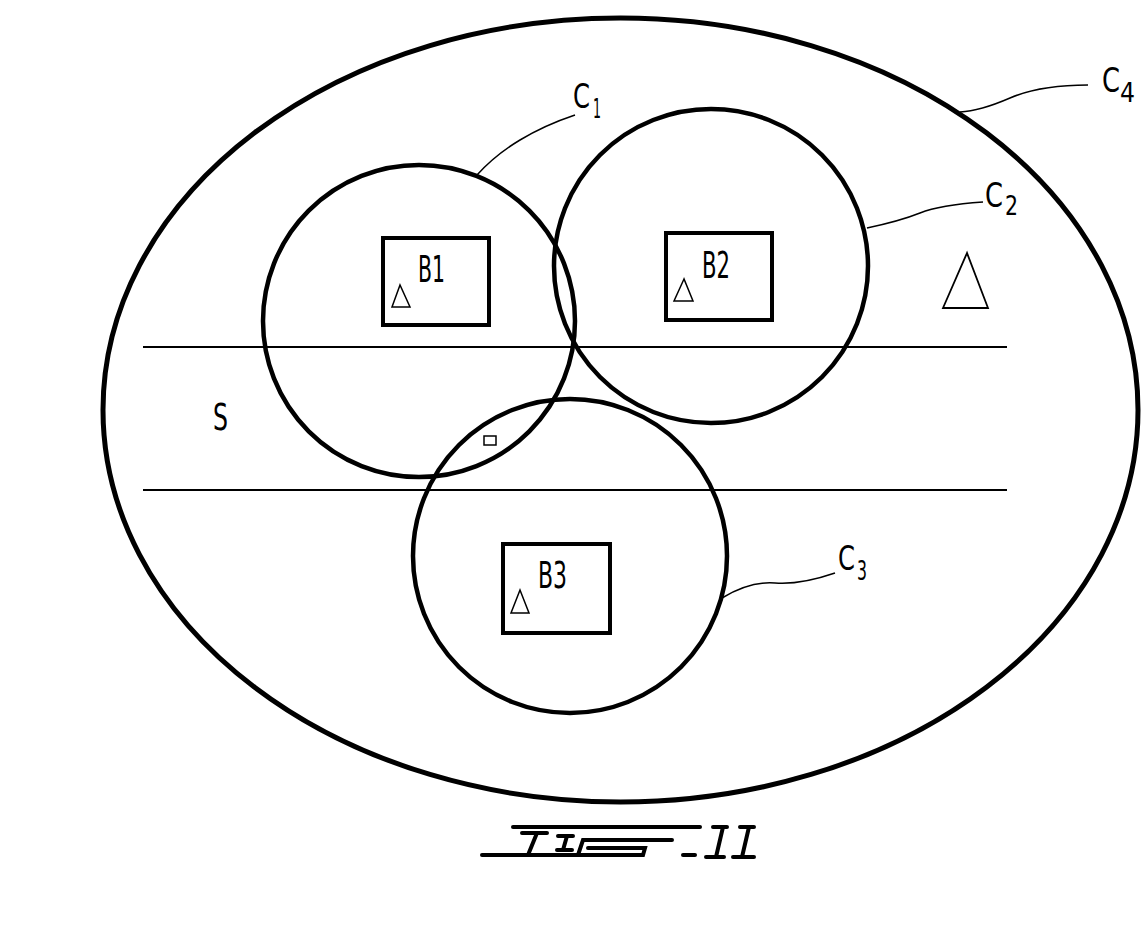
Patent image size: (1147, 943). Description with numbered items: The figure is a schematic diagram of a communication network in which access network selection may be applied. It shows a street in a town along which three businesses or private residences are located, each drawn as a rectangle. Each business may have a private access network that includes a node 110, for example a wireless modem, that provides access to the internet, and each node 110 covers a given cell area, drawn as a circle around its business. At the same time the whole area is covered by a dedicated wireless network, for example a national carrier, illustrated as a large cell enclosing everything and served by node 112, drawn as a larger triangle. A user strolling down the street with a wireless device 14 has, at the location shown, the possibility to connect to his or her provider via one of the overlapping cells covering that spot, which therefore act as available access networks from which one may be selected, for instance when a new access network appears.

The node 110 is at (397, 293).
The node 112 is at (977, 277).
The wireless device 14 is at (497, 440).